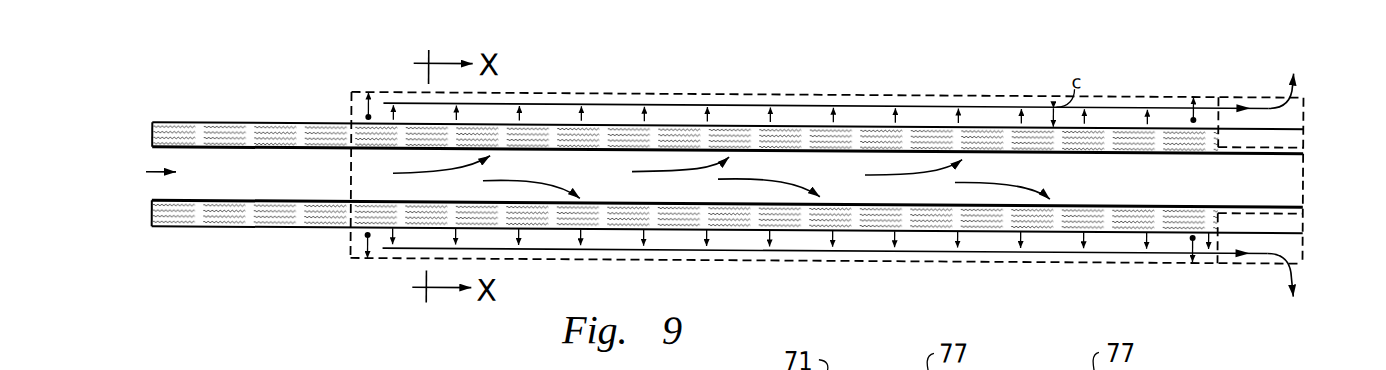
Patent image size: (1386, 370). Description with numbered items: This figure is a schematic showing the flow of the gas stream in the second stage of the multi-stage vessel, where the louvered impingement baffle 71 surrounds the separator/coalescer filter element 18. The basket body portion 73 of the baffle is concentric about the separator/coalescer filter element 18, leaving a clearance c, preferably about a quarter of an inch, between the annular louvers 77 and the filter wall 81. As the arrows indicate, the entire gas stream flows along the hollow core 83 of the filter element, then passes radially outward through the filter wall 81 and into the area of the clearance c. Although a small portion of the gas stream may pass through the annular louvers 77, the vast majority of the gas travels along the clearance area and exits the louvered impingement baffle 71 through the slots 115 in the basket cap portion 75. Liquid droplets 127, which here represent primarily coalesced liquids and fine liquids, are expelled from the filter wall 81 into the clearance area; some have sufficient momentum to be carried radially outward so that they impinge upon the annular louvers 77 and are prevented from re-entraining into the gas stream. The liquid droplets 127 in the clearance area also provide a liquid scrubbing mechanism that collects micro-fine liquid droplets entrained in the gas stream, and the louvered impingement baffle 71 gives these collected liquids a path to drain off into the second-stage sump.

The separator/coalescer filter element 18 is at (710, 164).
The louvered impingement baffle 71 is at (619, 74).
The basket body portion 73 is at (760, 90).
The basket cap portion 75 is at (1312, 103).
The annular louvers 77 is at (904, 91).
The filter wall 81 is at (182, 229).
The hollow core 83 is at (146, 173).
The slots 115 is at (1303, 241).
The liquid droplets 127 is at (365, 116).